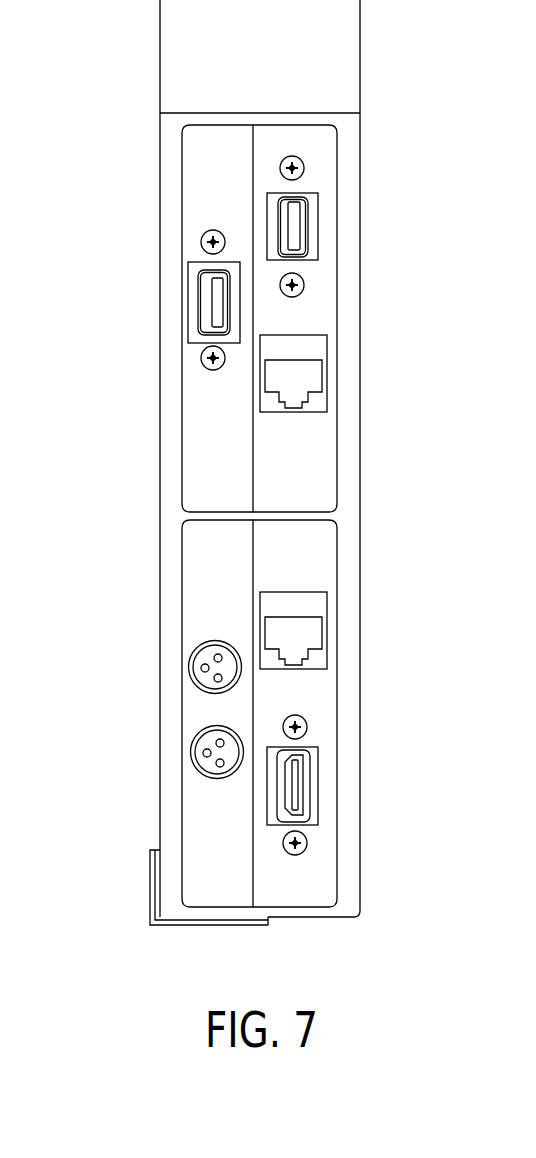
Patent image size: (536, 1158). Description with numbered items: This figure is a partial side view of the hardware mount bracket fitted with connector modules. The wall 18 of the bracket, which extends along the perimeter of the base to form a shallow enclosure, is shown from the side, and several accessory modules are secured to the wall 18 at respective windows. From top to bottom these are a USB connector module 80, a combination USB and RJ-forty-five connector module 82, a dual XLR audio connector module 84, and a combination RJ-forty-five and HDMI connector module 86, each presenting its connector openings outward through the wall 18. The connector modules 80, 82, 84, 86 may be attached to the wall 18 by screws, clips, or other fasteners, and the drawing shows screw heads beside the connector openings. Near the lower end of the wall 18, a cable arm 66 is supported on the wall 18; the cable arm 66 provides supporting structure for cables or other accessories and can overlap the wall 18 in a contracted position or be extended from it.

The wall 18 is at (340, 28).
The USB connector module 80 is at (198, 173).
The combination USB and RJ-45 connector module 82 is at (320, 300).
The dual XLR audio connector module 84 is at (198, 595).
The combination RJ-45 and HDMI connector module 86 is at (320, 695).
The cable arm 66 is at (152, 897).